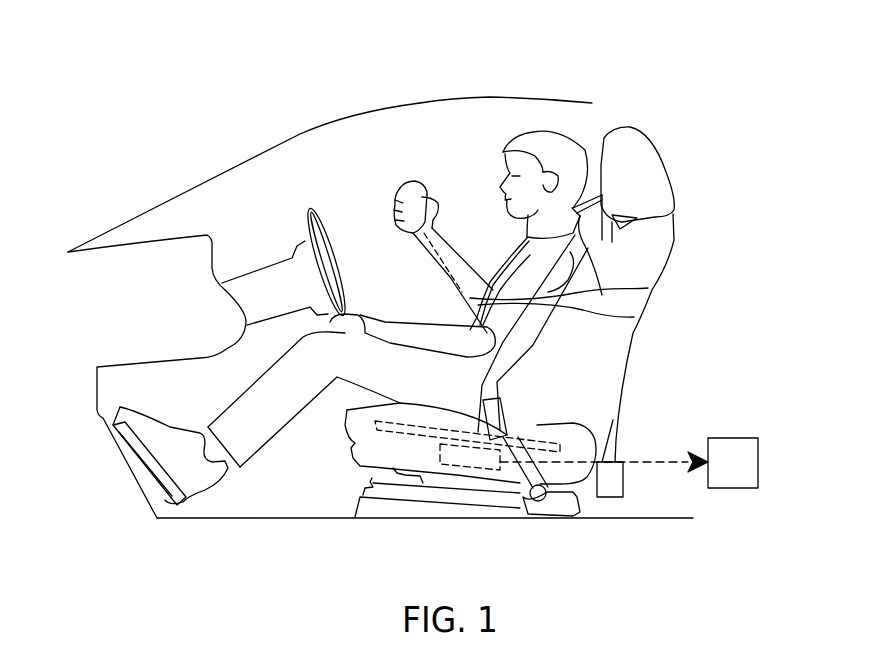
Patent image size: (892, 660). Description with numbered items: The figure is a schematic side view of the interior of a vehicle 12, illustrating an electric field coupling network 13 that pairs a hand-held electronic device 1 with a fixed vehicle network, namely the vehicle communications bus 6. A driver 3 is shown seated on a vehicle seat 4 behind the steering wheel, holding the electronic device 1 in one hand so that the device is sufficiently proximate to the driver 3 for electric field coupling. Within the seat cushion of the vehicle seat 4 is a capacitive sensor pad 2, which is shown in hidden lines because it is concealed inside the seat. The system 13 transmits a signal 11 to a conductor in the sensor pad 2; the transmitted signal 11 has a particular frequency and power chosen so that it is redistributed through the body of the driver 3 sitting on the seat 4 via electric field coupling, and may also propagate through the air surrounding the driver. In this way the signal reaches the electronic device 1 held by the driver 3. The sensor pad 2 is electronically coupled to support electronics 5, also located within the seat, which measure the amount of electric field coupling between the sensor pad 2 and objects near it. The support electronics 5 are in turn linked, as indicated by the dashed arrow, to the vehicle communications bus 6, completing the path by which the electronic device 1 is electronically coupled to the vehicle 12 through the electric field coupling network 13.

The electronic device 1 is at (413, 180).
The capacitive sensor pad 2 is at (413, 427).
The driver 3 is at (648, 288).
The vehicle seat 4 is at (655, 232).
The support electronics 5 is at (462, 463).
The vehicle communications bus 6 is at (725, 480).
The transmitted signal 11 is at (633, 317).
The vehicle 12 is at (493, 97).
The electric field coupling network 13 is at (641, 73).